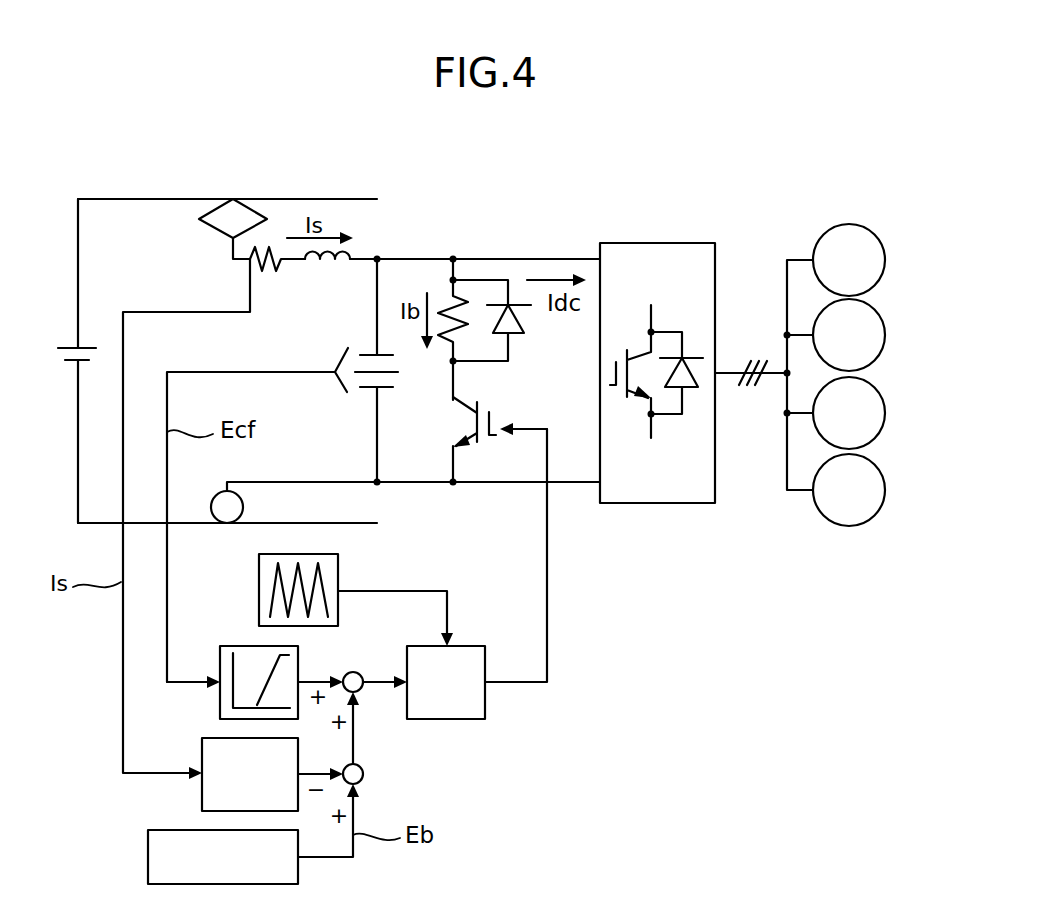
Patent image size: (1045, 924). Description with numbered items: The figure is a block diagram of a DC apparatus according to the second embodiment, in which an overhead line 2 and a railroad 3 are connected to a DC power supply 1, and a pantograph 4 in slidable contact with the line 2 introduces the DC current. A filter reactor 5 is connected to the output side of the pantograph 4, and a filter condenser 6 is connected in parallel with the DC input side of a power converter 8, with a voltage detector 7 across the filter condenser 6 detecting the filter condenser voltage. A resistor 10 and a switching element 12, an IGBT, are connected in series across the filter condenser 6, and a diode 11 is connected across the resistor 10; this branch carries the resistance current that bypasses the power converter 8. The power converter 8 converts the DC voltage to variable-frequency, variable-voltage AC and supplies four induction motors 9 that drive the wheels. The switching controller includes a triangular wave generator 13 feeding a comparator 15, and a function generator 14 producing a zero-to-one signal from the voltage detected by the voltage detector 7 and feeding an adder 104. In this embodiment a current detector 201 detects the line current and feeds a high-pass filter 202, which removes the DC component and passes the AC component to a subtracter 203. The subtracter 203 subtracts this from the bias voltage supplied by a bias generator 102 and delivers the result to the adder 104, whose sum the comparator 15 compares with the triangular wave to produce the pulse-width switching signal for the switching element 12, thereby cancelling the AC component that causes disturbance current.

The DC power supply 1 is at (90, 347).
The line 2 is at (153, 198).
The railroad 3 is at (101, 521).
The pantograph 4 is at (216, 228).
The filter reactor 5 is at (356, 249).
The filter condenser 6 is at (370, 354).
The voltage detector 7 is at (338, 394).
The power converter 8 is at (656, 506).
The induction motors 9 is at (848, 527).
The resistor 10 is at (447, 348).
The diode 11 is at (515, 336).
The switching element 12 is at (480, 437).
The triangular wave generator 13 is at (258, 591).
The function generator 14 is at (220, 663).
The comparator 15 is at (485, 703).
The adder 104 is at (360, 673).
The current detector 201 is at (275, 268).
The high-pass filter 202 is at (200, 793).
The subtracter 203 is at (363, 774).
The bias generator 102 is at (147, 853).